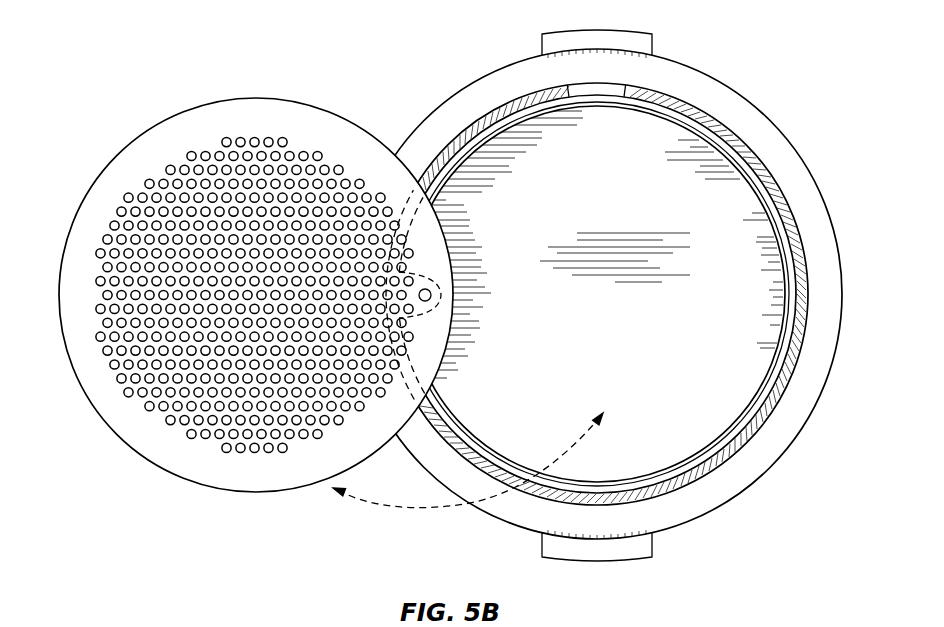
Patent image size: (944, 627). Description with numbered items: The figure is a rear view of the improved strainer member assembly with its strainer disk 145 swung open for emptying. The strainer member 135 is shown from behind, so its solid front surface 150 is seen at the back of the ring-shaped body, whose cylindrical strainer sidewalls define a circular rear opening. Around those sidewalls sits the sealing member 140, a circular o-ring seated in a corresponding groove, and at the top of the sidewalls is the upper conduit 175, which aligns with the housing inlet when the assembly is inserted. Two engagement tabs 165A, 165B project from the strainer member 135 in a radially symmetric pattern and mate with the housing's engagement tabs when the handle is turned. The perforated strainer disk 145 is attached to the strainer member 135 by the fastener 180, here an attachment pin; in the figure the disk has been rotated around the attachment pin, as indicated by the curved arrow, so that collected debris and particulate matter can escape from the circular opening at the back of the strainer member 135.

The strainer member 135 is at (158, 142).
The strainer disk 145 is at (162, 463).
The fastener 180 is at (432, 298).
The upper conduit 175 is at (601, 88).
The sealing member 140 is at (778, 174).
The solid front surface 150 is at (788, 430).
The engagement tab 165A is at (608, 32).
The engagement tab 165B is at (625, 556).